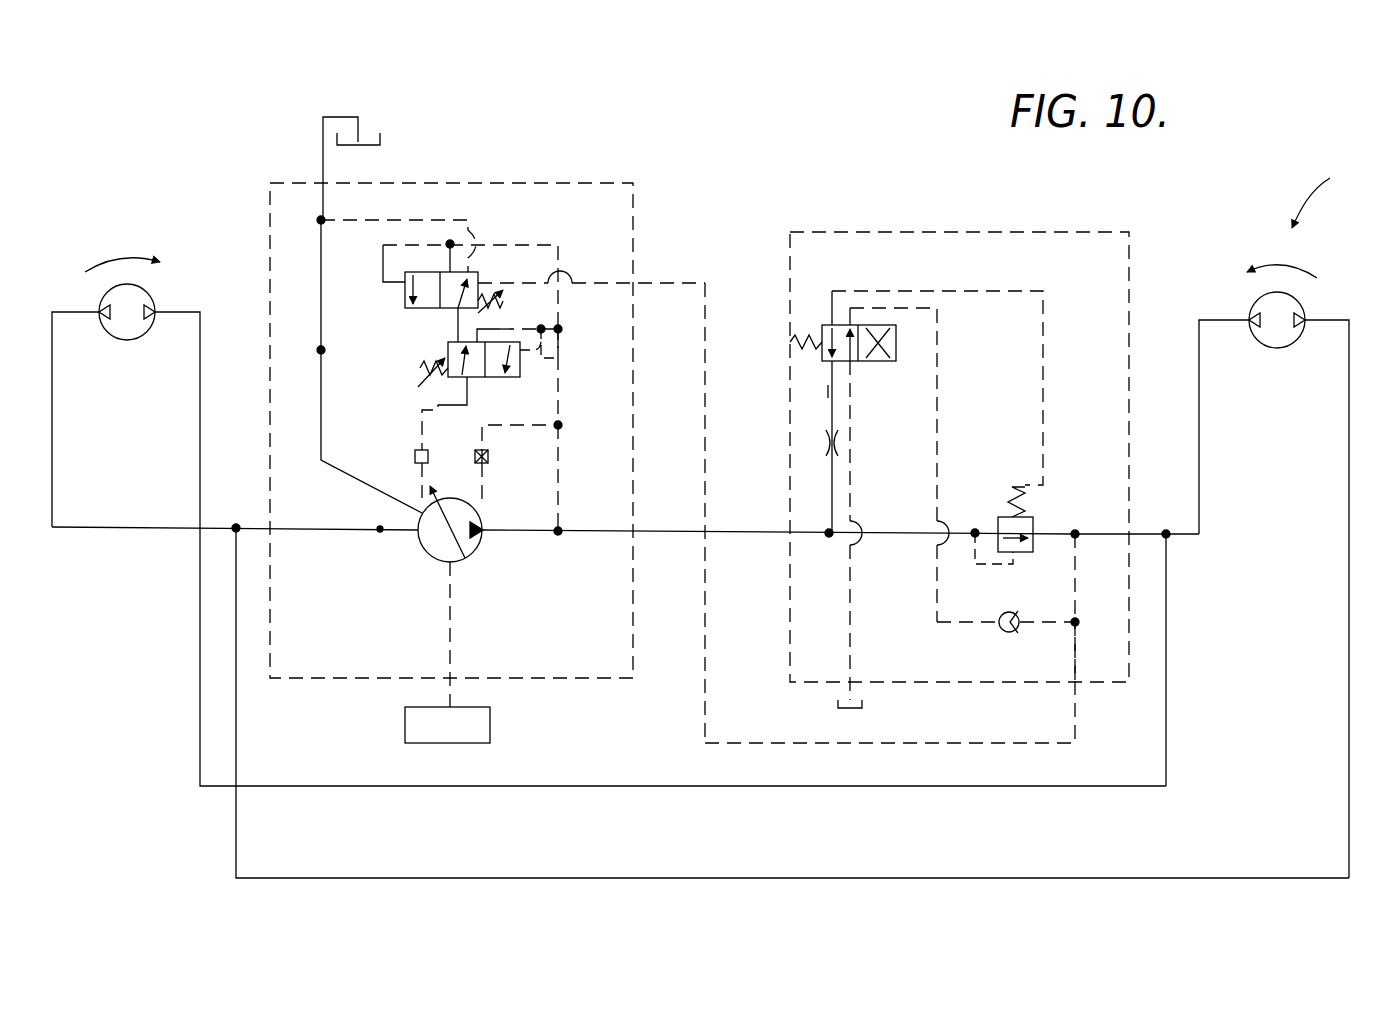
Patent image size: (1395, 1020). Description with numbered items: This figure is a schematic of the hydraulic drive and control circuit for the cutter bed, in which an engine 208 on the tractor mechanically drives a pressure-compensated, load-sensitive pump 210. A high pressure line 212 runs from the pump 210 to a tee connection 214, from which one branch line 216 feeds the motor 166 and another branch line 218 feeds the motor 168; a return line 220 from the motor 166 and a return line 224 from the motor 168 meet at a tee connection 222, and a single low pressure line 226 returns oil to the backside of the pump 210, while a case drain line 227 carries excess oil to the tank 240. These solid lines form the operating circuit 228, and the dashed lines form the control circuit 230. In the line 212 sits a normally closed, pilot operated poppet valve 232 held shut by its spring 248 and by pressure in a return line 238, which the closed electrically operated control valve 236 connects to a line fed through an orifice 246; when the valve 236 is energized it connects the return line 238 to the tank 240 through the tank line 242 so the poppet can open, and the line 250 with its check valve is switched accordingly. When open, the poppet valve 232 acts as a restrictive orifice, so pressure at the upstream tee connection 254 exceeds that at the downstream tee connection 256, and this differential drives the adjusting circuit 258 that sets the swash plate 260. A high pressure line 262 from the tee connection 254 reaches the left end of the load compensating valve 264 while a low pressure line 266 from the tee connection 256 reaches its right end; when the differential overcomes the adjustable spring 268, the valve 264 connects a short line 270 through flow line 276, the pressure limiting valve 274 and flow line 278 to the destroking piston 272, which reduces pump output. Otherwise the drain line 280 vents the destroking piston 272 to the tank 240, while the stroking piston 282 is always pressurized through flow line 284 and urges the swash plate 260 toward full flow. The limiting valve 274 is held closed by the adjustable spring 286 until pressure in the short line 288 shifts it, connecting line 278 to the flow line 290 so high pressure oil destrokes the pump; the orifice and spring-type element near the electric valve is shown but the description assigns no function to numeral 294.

The motor 166 is at (133, 293).
The motor 168 is at (1290, 310).
The engine 208 is at (492, 728).
The pump 210 is at (468, 558).
The high pressure line 212 is at (605, 537).
The tee connection 214 is at (1165, 528).
The branch line 216 is at (1168, 655).
The branch line 218 is at (1202, 395).
The return line 220 is at (55, 445).
The tee connection 222 is at (236, 522).
The return line 224 is at (1345, 462).
The low pressure line 226 is at (302, 535).
The case drain line 227 is at (362, 482).
The operating circuit 228 is at (1335, 187).
The control circuit 230 is at (658, 282).
The poppet valve 232 is at (995, 517).
The electrically operated control valve 236 is at (858, 368).
The return line 238 is at (1020, 268).
The tank 240 is at (383, 138).
The tank line 242 is at (846, 650).
The orifice 246 is at (822, 443).
The spring 248 is at (1028, 492).
The line 250 is at (937, 438).
The tee connection 254 is at (560, 528).
The tee connection 256 is at (1078, 538).
The adjusting circuit 258 is at (505, 223).
The swash plate 260 is at (447, 532).
The high pressure line 262 is at (565, 478).
The load compensating valve 264 is at (405, 290).
The low pressure line 266 is at (708, 610).
The spring 268 is at (505, 300).
The short line 270 is at (383, 262).
The destroking piston 272 is at (415, 457).
The pressure limiting valve 274 is at (492, 382).
The flow line 276 is at (455, 320).
The flow line 278 is at (415, 412).
The drain line 280 is at (447, 212).
The stroking piston 282 is at (490, 462).
The flow line 284 is at (545, 427).
The spring 286 is at (418, 372).
The short line 288 is at (566, 350).
The flow line 290 is at (566, 316).
The control valve supply line 294 is at (820, 392).